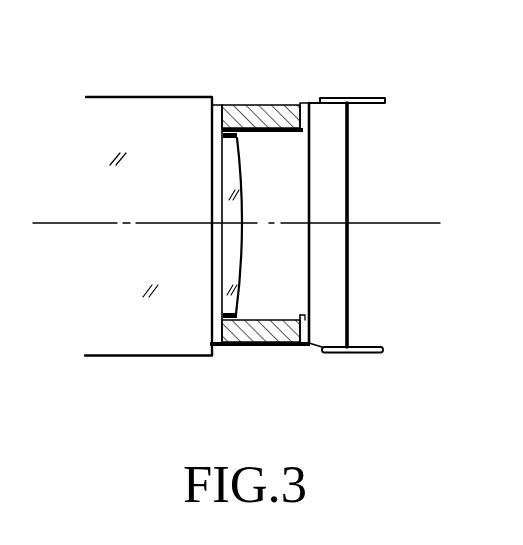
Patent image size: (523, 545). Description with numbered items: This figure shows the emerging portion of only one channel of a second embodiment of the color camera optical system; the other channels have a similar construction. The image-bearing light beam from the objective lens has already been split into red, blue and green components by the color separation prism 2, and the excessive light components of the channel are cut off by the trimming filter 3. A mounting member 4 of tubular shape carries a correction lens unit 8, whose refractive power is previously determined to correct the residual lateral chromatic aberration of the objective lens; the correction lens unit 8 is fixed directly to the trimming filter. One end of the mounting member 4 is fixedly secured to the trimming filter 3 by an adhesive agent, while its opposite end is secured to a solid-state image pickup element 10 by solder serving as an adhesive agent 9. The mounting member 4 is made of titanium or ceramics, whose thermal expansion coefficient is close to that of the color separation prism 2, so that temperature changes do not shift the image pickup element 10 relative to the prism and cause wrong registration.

The color separation prism 2 is at (123, 96).
The trimming filter 3 is at (217, 346).
The mounting member 4 is at (263, 106).
The correction lens unit 8 is at (238, 298).
The adhesive agent 9 is at (305, 103).
The solid-state image pickup element 10 is at (348, 193).